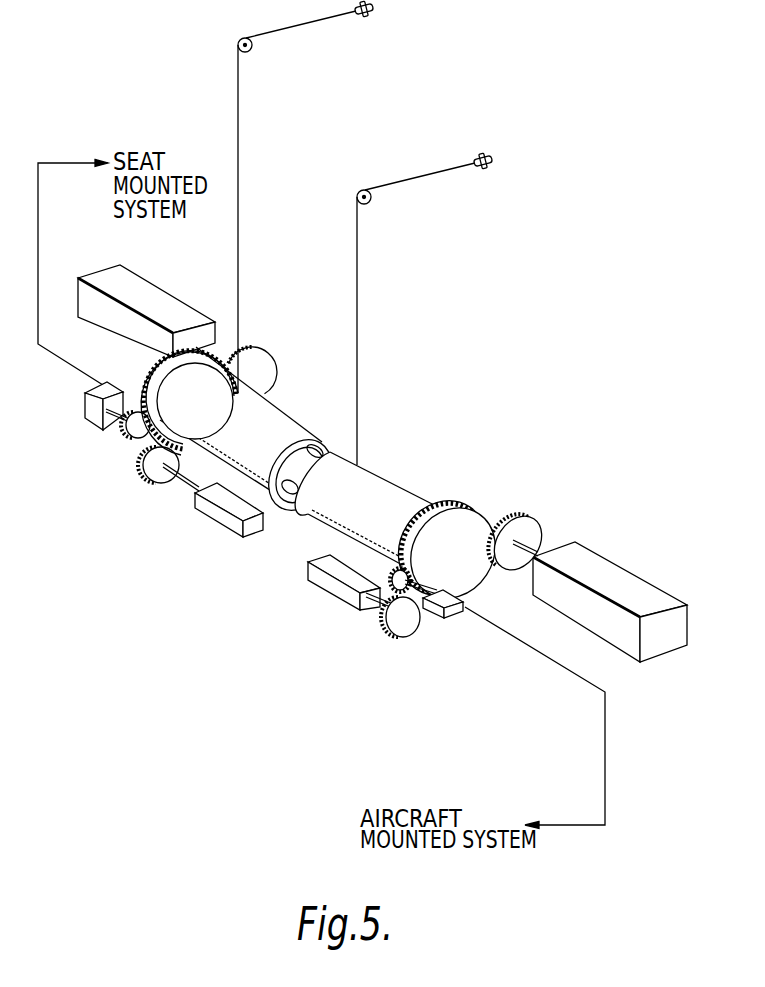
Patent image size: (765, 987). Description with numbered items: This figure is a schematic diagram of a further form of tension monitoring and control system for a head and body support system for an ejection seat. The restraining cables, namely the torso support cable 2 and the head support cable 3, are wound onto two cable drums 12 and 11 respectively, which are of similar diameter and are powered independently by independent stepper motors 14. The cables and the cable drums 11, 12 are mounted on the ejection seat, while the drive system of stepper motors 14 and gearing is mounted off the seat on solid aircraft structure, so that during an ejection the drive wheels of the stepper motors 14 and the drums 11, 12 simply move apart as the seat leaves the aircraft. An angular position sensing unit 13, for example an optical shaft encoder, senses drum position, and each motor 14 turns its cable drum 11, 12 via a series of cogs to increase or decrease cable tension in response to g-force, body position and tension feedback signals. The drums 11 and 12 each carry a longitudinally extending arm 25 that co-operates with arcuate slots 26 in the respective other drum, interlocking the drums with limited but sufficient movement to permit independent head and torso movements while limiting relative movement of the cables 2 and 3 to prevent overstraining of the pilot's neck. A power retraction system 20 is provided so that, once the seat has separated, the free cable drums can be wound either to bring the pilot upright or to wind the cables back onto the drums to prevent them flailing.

The torso support cable 2 is at (437, 178).
The head support cable 3 is at (321, 28).
The cable drum 11 is at (273, 420).
The cable drum 12 is at (377, 490).
The angular position sensing unit 13 is at (455, 620).
The stepper motor 14 is at (333, 585).
The power retraction system 20 is at (170, 290).
The longitudinally extending arm 25 is at (330, 447).
The arcuate slots 26 is at (283, 452).